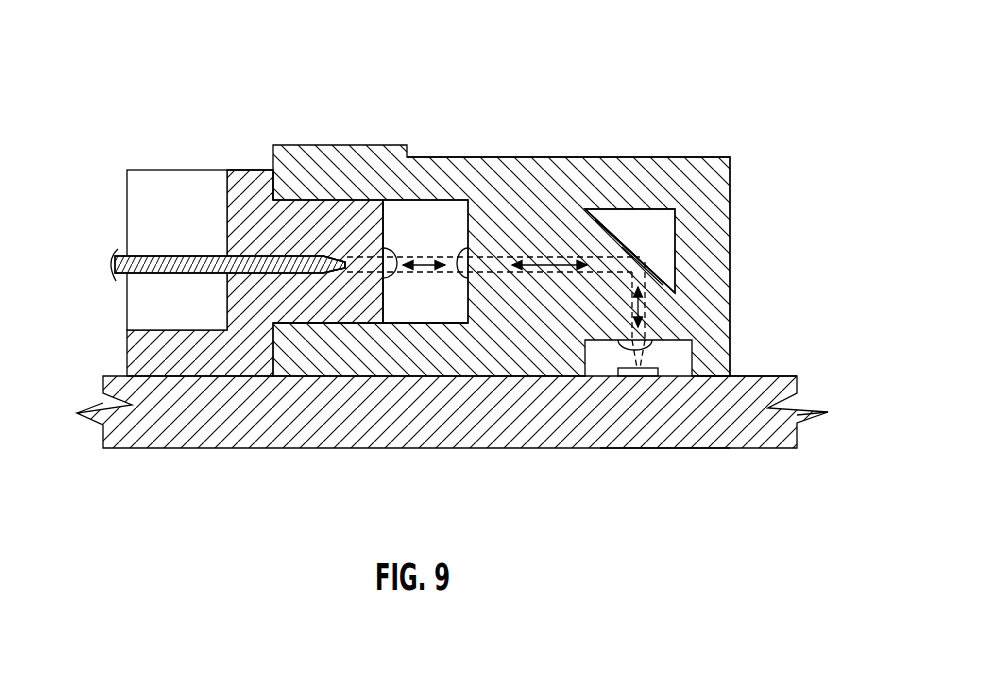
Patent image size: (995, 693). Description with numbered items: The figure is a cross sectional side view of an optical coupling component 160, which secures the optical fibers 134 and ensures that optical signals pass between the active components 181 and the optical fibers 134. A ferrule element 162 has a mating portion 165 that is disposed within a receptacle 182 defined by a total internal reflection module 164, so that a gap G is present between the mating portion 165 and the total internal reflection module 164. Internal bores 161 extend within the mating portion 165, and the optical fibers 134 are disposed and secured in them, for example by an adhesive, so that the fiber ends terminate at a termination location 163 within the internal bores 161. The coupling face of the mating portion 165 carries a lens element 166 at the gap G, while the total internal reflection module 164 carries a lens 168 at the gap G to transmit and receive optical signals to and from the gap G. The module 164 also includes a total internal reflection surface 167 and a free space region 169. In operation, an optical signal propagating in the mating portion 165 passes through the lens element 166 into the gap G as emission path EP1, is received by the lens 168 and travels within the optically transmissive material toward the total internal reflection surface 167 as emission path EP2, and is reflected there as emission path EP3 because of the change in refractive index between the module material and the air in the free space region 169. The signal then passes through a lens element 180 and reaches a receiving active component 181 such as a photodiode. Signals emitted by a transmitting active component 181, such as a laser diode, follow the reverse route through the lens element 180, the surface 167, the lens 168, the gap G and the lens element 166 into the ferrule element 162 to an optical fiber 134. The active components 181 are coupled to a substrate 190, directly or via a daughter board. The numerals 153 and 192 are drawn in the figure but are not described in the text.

The optical fiber 134 is at (150, 253).
The substrate bottom surface 153 is at (667, 448).
The optical coupling component 160 is at (340, 130).
The internal bore 161 is at (273, 248).
The ferrule element 162 is at (237, 147).
The termination location 163 is at (350, 253).
The total internal reflection module 164 is at (590, 135).
The mating portion 165 is at (320, 312).
The lens element 166 is at (385, 278).
The total internal reflection surface 167 is at (593, 218).
The lens 168 is at (468, 280).
The free space region 169 is at (637, 225).
The lens element 180 is at (612, 345).
The active component 181 is at (658, 372).
The receptacle 182 is at (420, 312).
The substrate 190 is at (763, 452).
The substrate top surface 192 is at (752, 376).
The gap G is at (450, 212).
The emission path EP1 is at (420, 257).
The emission path EP2 is at (528, 257).
The emission path EP3 is at (645, 310).